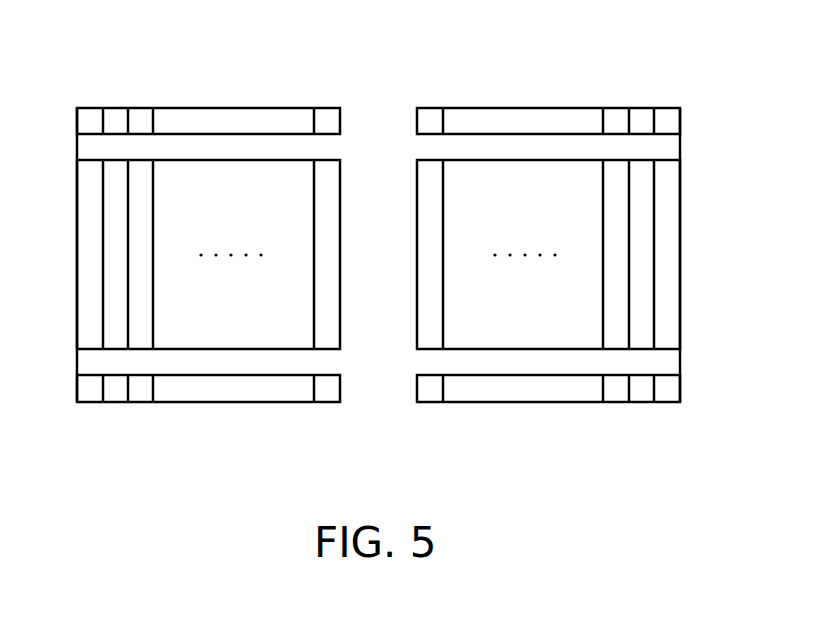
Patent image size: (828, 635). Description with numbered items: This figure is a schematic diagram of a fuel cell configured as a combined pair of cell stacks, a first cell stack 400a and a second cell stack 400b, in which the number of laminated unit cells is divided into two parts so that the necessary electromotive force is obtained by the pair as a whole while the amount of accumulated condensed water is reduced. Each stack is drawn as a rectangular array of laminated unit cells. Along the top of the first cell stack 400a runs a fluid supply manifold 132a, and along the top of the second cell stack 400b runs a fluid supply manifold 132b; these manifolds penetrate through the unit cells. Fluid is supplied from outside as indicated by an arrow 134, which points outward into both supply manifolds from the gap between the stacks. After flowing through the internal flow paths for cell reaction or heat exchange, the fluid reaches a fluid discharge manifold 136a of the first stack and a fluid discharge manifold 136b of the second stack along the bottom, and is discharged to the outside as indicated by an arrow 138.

The first cell stack 400a is at (208, 234).
The second cell stack 400b is at (548, 234).
The fluid supply manifold 132a is at (248, 150).
The fluid supply manifold 132b is at (558, 150).
The arrow 134 is at (433, 149).
The fluid discharge manifold 136a is at (226, 366).
The fluid discharge manifold 136b is at (539, 366).
The arrow 138 is at (432, 363).